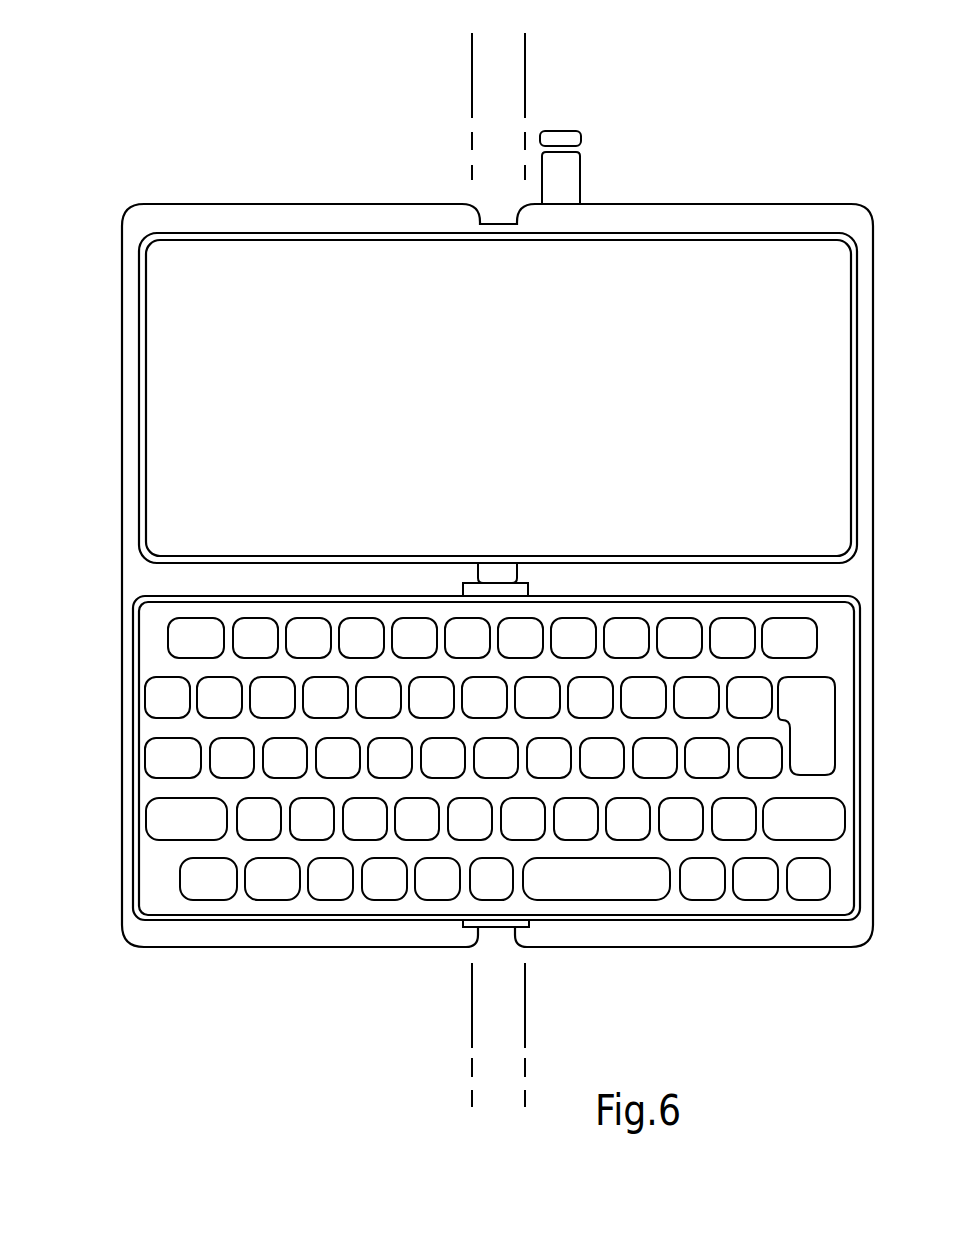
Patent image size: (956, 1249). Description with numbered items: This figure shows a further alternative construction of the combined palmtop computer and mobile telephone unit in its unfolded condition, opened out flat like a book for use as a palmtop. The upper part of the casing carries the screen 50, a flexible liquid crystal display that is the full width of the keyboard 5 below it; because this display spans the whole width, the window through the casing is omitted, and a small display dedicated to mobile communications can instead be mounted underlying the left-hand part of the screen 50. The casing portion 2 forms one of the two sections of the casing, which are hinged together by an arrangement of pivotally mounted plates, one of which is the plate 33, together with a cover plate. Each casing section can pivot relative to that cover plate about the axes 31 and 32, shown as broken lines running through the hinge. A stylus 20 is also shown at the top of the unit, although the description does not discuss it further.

The casing portion 2 is at (750, 925).
The keyboard 5 is at (150, 729).
The stylus 20 is at (565, 136).
The axis 31 is at (472, 1040).
The axis 32 is at (525, 1040).
The pivotally mounted plate 33 is at (489, 927).
The screen 50 is at (162, 421).